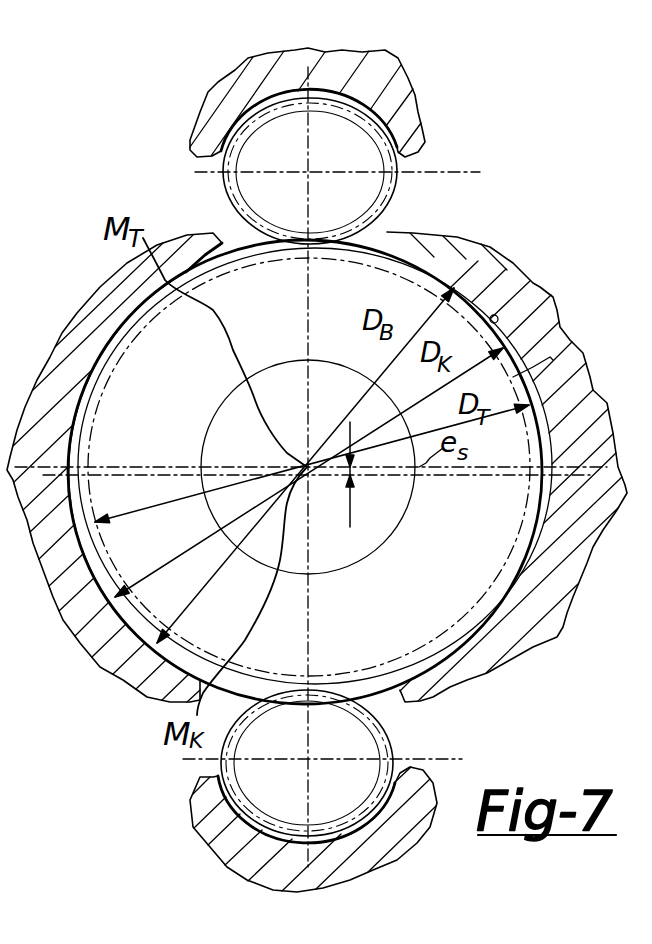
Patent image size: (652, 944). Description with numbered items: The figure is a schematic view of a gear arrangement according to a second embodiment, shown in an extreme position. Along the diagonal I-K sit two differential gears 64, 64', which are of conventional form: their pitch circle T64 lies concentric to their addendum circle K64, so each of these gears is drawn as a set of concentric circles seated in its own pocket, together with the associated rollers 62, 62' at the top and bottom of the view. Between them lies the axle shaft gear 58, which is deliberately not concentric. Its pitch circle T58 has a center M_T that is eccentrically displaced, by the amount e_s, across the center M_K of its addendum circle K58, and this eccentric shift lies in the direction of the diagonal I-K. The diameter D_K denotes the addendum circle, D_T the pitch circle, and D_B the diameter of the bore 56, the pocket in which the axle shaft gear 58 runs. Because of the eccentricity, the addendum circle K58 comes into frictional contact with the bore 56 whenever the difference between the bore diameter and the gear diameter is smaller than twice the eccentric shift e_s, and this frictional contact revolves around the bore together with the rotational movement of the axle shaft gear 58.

The bore 56 is at (498, 316).
The axle shaft gear 58 is at (553, 360).
The roller 62 is at (370, 163).
The differential gear 64 is at (352, 100).
The roller 62' is at (348, 783).
The differential gear 64' is at (359, 814).
The pitch circle T64 is at (387, 180).
The addendum circle K64 is at (383, 213).
The addendum circle K58 is at (545, 532).
The pitch circle T58 is at (485, 598).